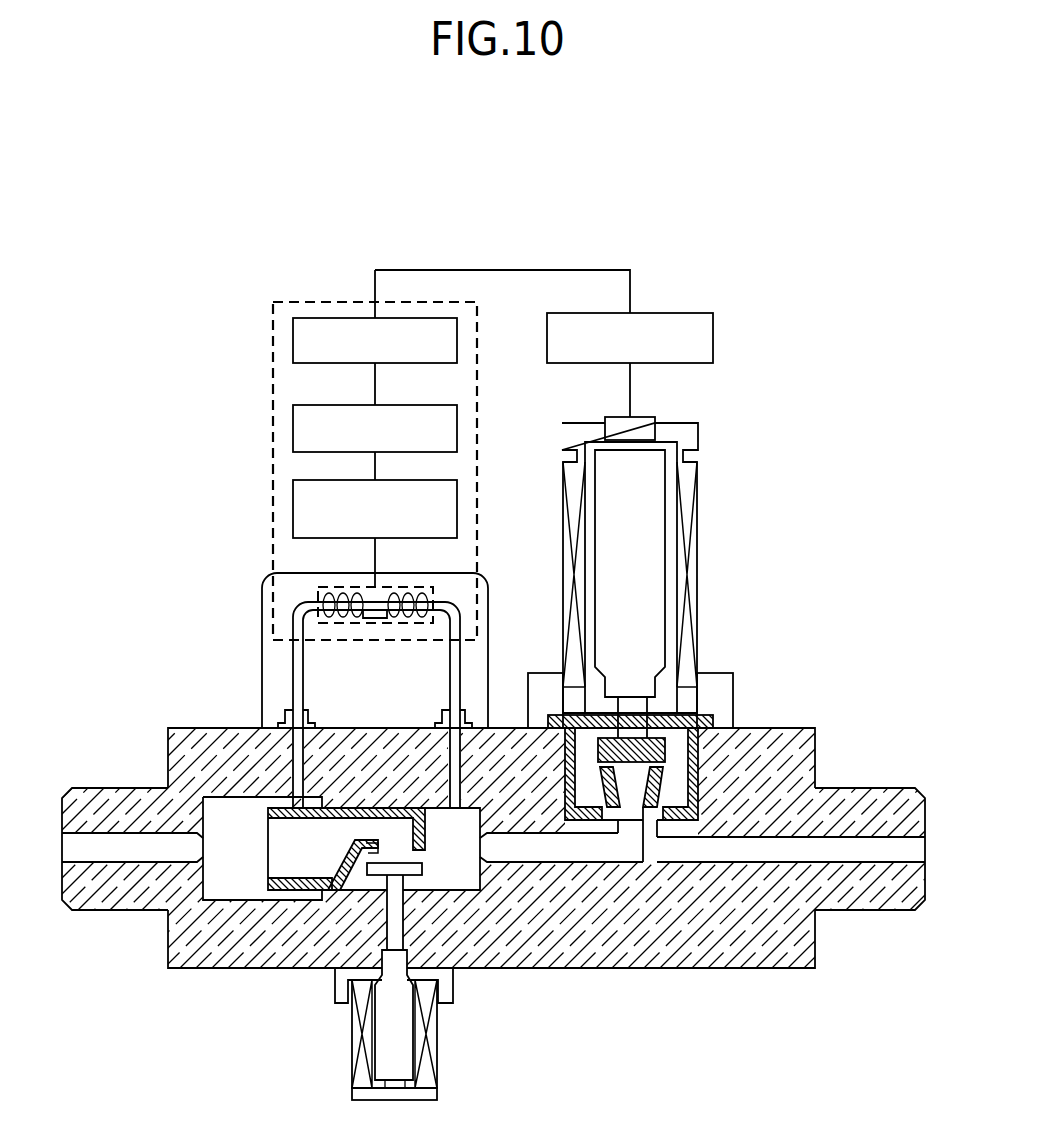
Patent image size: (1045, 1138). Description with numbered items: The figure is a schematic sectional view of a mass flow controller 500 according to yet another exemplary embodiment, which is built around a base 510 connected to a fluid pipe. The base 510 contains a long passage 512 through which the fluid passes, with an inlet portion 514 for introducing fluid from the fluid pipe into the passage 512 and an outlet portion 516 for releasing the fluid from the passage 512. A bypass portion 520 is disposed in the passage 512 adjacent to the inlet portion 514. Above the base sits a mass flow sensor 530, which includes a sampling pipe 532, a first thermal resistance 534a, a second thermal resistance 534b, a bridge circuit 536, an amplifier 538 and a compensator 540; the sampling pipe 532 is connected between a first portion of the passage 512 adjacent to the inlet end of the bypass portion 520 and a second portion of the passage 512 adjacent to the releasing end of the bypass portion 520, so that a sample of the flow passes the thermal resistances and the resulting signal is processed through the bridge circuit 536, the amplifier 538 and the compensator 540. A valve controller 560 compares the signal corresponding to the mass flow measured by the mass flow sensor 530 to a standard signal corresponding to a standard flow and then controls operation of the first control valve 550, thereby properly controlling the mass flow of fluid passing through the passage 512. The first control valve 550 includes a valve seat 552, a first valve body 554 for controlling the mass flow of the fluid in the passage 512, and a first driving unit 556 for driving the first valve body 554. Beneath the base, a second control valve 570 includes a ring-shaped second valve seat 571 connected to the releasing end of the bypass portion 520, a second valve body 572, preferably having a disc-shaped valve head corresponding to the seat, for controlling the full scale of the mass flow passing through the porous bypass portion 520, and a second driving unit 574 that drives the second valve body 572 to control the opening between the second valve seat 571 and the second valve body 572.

The mass flow controller 500 is at (818, 437).
The base 510 is at (808, 745).
The passage 512 is at (583, 853).
The inlet portion 514 is at (127, 910).
The outlet portion 516 is at (858, 905).
The bypass portion 520 is at (293, 887).
The mass flow sensor 530 is at (258, 460).
The sampling pipe 532 is at (297, 662).
The first thermal resistance 534a is at (318, 590).
The second thermal resistance 534b is at (408, 605).
The bridge circuit 536 is at (293, 512).
The amplifier 538 is at (293, 420).
The compensator 540 is at (293, 338).
The first control valve 550 is at (720, 548).
The valve seat 552 is at (700, 765).
The first valve body 554 is at (685, 795).
The first driving unit 556 is at (690, 580).
The valve controller 560 is at (713, 340).
The second control valve 570 is at (332, 1052).
The second valve seat 571 is at (383, 843).
The second valve body 572 is at (415, 868).
The second driving unit 574 is at (438, 1063).